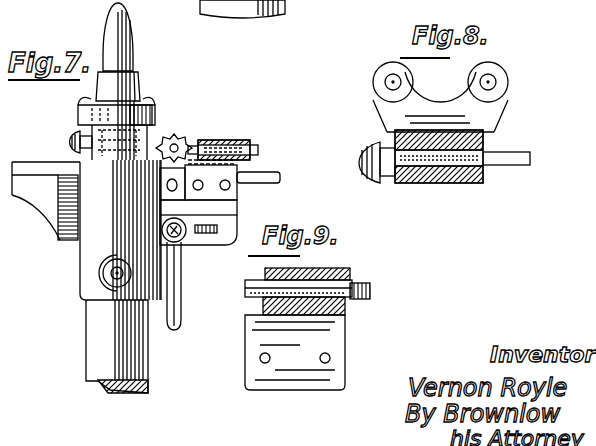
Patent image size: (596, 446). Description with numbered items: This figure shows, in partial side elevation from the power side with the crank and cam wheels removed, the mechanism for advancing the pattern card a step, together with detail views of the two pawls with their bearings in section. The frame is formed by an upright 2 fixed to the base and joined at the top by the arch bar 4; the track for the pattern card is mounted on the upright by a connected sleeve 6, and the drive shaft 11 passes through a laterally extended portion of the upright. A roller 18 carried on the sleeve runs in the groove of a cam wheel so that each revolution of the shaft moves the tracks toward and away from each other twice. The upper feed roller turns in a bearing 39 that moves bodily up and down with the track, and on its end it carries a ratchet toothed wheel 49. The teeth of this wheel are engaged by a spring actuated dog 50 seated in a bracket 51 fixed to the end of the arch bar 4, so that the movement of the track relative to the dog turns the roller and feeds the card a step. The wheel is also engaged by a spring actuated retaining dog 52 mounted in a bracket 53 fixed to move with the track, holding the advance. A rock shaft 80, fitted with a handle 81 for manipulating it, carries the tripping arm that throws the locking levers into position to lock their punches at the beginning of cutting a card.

In FIG. 7, the upright 2 is at (109, 163).
In FIG. 7, the arch bar 4 is at (131, 56).
In FIG. 7, the sleeve 6 is at (165, 200).
In FIG. 7, the drive shaft 11 is at (238, 16).
In FIG. 7, the roller 18 is at (107, 304).
In FIG. 7, the bearing 39 is at (115, 260).
In FIG. 7, the ratchet toothed wheel 49 is at (173, 134).
In FIG. 7, the spring actuated dog 50 is at (77, 142).
In FIG. 8, the spring actuated dog 50 is at (492, 180).
In FIG. 7, the bracket 51 is at (148, 104).
In FIG. 8, the bracket 51 is at (440, 97).
In FIG. 7, the spring actuated retaining dog 52 is at (253, 150).
In FIG. 9, the spring actuated retaining dog 52 is at (258, 288).
In FIG. 7, the bracket 53 is at (212, 148).
In FIG. 9, the bracket 53 is at (295, 343).
In FIG. 7, the rock shaft 80 is at (186, 246).
In FIG. 7, the handle 81 is at (182, 320).